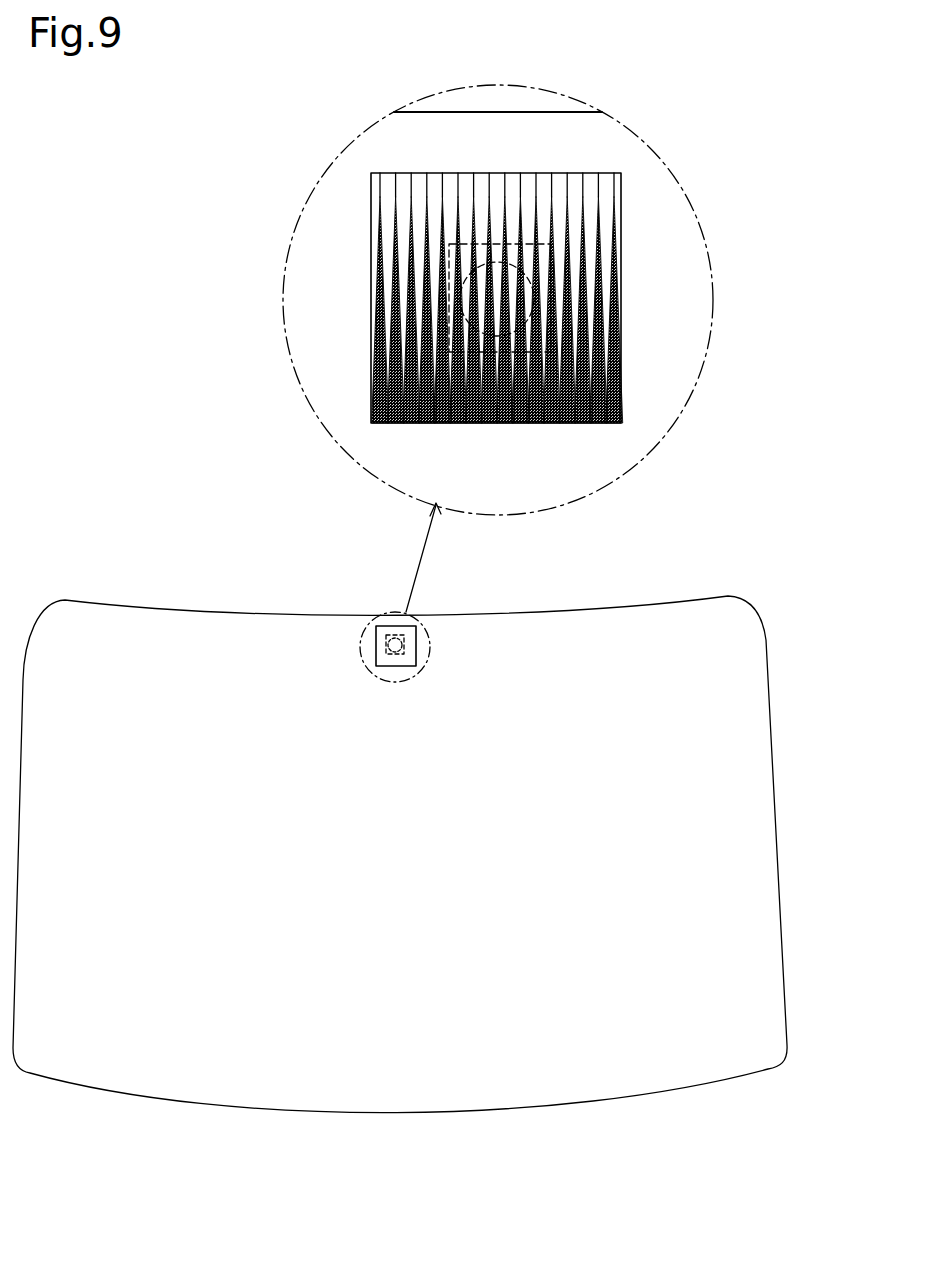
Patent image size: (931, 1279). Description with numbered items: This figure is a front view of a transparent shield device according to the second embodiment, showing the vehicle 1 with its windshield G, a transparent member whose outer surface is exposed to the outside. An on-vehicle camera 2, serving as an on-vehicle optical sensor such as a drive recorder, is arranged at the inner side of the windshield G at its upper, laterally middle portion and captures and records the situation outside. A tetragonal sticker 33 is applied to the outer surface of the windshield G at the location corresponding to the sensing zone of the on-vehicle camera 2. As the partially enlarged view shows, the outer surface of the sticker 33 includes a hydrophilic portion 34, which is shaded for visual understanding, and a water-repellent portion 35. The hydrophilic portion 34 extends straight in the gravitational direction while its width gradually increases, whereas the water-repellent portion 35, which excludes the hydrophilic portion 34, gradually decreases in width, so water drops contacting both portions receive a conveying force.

The vehicle 1 is at (107, 582).
The windshield G is at (192, 626).
The on-vehicle camera 2 is at (496, 243).
The sticker 33 is at (622, 228).
The hydrophilic portion 34 is at (505, 424).
The water-repellent portion 35 is at (541, 179).